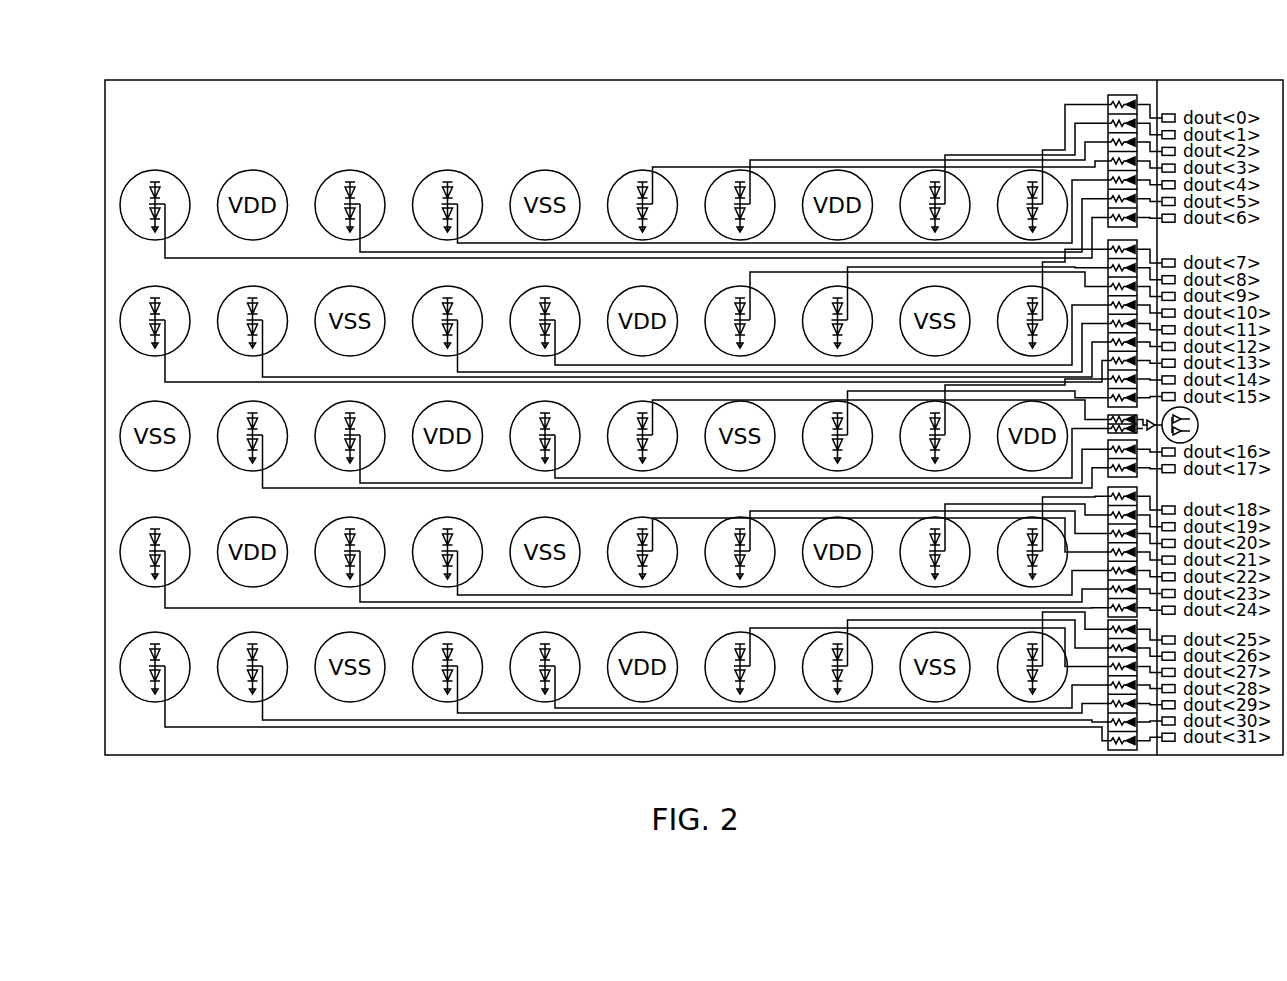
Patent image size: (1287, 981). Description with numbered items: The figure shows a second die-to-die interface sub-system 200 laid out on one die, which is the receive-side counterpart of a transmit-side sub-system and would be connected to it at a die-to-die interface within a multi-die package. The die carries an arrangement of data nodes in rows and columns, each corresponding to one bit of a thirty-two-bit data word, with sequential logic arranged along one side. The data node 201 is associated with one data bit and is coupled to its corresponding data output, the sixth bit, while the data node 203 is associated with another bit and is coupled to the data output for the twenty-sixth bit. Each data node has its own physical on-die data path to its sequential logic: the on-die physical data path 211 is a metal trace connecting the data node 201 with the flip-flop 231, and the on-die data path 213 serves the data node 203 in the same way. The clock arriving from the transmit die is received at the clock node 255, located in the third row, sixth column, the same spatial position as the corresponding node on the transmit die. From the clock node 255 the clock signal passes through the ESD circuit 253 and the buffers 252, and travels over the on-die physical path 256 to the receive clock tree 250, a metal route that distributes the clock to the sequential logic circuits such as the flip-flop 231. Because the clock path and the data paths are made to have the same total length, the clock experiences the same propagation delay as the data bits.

The second die-to-die interface sub-system 200 is at (686, 70).
The data node 201 is at (156, 166).
The on-die physical data path 211 is at (298, 252).
The data node 203 is at (859, 697).
The on-die data path 213 is at (985, 634).
The flip-flop 231 is at (1168, 198).
The receive clock tree 250 is at (1168, 240).
The buffers 252 is at (1204, 427).
The ESD circuit 253 is at (1144, 444).
The clock node 255 is at (610, 460).
The on-die physical path 256 is at (690, 404).